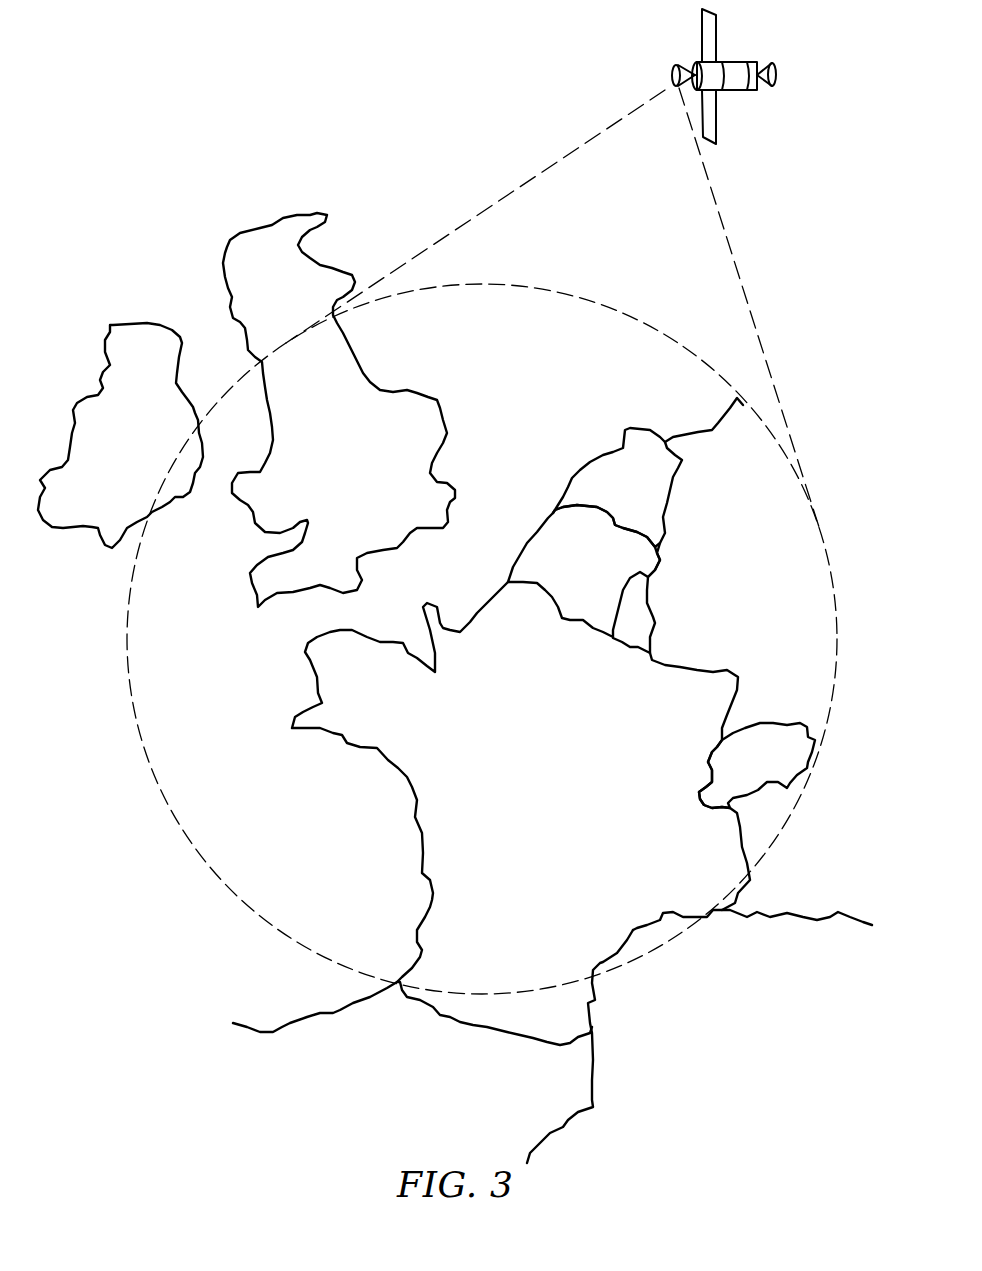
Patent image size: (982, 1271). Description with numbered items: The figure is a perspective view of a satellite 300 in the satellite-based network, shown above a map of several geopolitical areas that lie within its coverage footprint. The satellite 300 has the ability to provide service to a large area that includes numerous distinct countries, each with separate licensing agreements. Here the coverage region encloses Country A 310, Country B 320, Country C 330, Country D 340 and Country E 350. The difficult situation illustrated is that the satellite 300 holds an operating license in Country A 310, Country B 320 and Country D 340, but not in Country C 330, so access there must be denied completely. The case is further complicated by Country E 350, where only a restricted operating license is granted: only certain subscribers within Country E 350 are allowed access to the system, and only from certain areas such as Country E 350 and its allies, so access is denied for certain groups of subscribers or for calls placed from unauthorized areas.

The satellite 300 is at (776, 76).
The Country A 310 is at (521, 782).
The Country B 320 is at (757, 765).
The Country C 330 is at (648, 472).
The Country D 340 is at (339, 410).
The Country E 350 is at (584, 571).